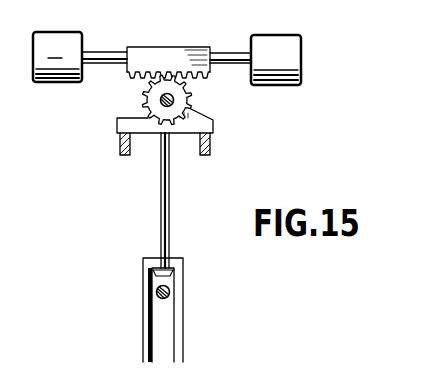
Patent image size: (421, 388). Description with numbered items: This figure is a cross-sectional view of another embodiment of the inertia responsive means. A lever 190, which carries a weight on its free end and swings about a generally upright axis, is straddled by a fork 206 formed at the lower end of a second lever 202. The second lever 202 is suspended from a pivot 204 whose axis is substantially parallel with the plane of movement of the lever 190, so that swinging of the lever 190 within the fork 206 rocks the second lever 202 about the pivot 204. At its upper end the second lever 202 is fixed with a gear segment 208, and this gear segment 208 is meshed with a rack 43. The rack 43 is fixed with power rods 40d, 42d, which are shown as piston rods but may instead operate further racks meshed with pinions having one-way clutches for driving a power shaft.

The power rod 40d is at (104, 53).
The power rod 42d is at (227, 60).
The rack 43 is at (153, 60).
The gear segment 208 is at (187, 86).
The pivot 204 is at (161, 102).
The second lever 202 is at (161, 225).
The fork 206 is at (180, 312).
The lever 190 is at (157, 291).